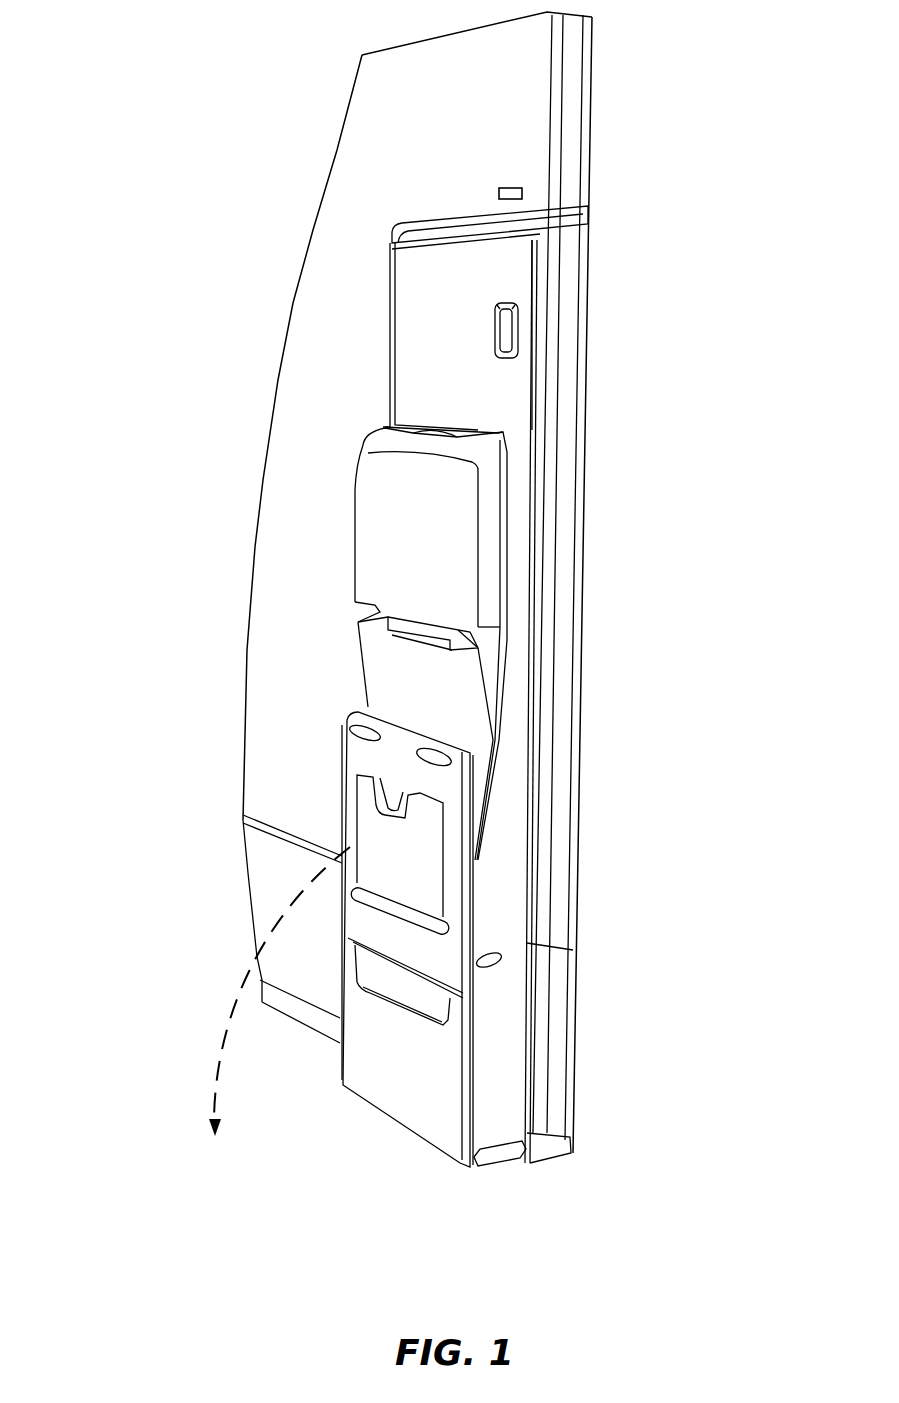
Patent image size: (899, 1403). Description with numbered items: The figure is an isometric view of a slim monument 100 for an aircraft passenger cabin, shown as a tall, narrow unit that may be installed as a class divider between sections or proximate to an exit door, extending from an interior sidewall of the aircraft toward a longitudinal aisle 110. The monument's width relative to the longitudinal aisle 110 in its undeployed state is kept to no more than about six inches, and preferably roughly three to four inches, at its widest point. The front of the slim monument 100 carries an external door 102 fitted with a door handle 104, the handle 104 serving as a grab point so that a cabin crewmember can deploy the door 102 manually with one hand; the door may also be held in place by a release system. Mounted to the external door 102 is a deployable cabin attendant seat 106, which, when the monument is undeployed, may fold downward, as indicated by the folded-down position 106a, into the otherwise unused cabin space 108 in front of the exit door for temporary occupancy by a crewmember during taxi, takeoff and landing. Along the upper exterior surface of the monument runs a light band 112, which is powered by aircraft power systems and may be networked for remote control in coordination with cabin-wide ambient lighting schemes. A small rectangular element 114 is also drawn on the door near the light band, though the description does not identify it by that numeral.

The slim monument 100 is at (84, 54).
The external door 102 is at (427, 340).
The door handle 104 is at (508, 332).
The deployable cabin attendant seat 106 is at (407, 663).
The folded-down cabin attendant seat 106a is at (217, 1073).
The cabin space 108 is at (153, 928).
The longitudinal aisle 110 is at (640, 1186).
The light bands 112 is at (562, 218).
The indicator 114 is at (522, 190).